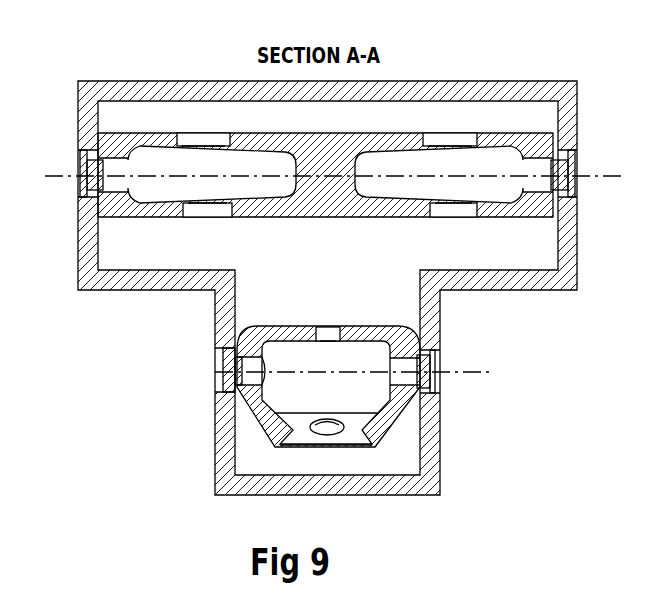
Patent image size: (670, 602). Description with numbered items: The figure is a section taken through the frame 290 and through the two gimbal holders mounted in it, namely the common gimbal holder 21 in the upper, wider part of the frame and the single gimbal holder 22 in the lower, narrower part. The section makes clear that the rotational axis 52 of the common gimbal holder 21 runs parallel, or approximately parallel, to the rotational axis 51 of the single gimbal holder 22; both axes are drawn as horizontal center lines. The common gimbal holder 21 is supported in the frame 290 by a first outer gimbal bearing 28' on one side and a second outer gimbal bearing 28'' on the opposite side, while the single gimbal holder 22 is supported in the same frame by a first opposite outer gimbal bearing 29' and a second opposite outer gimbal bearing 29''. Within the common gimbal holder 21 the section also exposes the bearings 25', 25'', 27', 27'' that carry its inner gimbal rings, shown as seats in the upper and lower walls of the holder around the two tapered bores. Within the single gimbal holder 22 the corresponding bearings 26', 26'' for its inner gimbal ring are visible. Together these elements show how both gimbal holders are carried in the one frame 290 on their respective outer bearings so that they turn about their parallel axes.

The common gimbal holder 21 is at (348, 152).
The single gimbal holder 22 is at (352, 435).
The bearing for inner gimbal ring of common gimbal holder 25' is at (535, 137).
The bearing for inner gimbal ring of common gimbal holder 25'' is at (511, 81).
The bearing for inner gimbal ring of single gimbal holder 26' is at (241, 358).
The bearing for inner gimbal ring of single gimbal holder 26'' is at (257, 480).
The bearing for inner gimbal ring of common gimbal holder 27' is at (190, 279).
The bearing for inner gimbal ring of common gimbal holder 27'' is at (156, 239).
The first outer gimbal bearing 28' is at (596, 152).
The second outer gimbal bearing 28'' is at (57, 187).
The first opposite outer gimbal bearing 29' is at (462, 360).
The second opposite outer gimbal bearing 29'' is at (192, 408).
The rotational axis of single gimbal holder 51 is at (460, 372).
The rotational axis of common gimbal holder 52 is at (593, 177).
The frame 290 is at (517, 288).